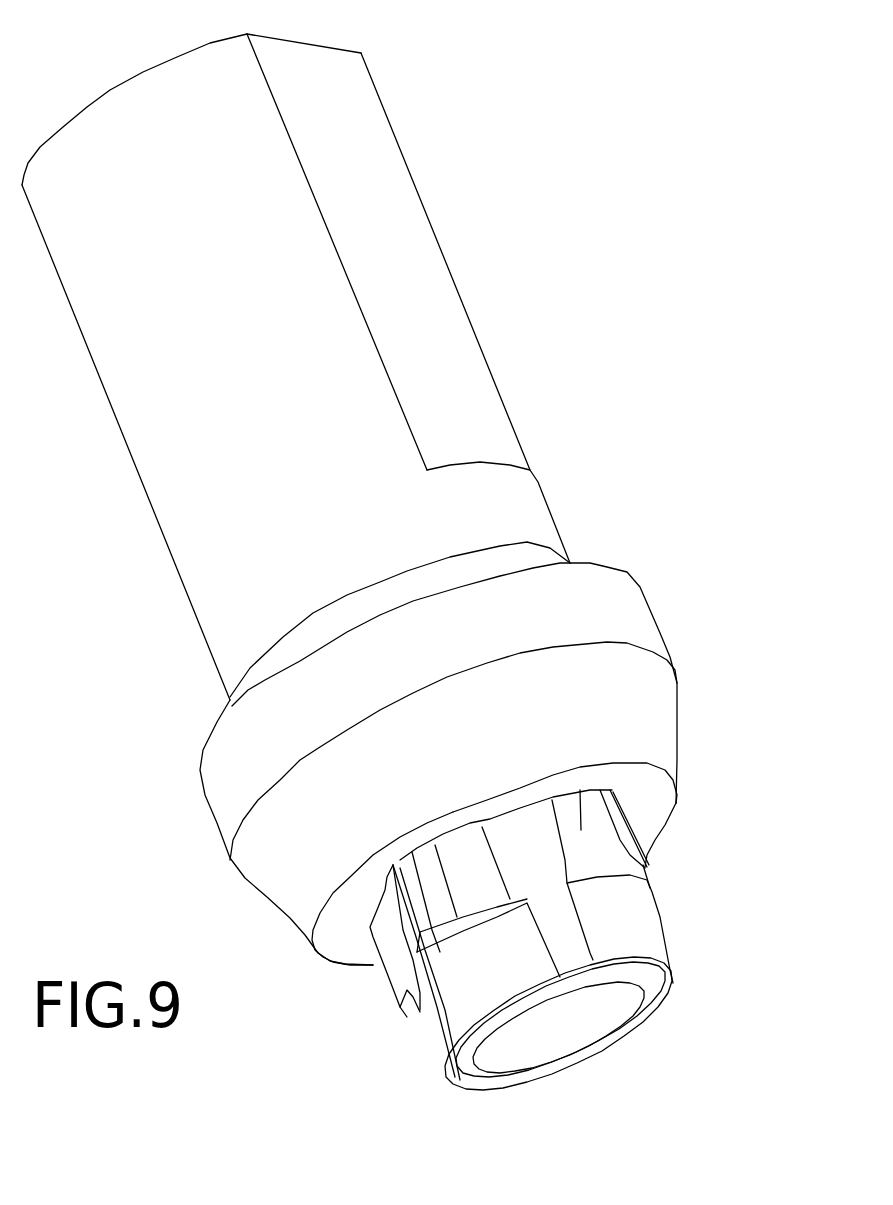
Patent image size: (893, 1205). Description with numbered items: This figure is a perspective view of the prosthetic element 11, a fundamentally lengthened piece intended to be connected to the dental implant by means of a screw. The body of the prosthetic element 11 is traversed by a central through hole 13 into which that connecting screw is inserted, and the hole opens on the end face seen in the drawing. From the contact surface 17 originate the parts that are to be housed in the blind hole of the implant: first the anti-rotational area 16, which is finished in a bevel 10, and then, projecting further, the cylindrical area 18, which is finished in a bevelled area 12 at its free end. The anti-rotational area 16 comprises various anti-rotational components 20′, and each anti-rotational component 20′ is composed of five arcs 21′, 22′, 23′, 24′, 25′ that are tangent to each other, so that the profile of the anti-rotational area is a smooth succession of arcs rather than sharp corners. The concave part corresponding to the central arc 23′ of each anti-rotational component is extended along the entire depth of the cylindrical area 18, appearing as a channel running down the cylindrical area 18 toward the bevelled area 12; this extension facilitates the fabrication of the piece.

The bevel 10 is at (619, 819).
The prosthetic element 11 is at (527, 213).
The bevelled area 12 is at (635, 1023).
The central through hole 13 is at (612, 1027).
The anti-rotational area 16 is at (496, 764).
The contact surface 17 is at (453, 856).
The cylindrical area 18 is at (614, 940).
The anti-rotational component 20′ is at (384, 949).
The arc 21′ is at (409, 857).
The arc 22′ is at (455, 839).
The central arc 23′ is at (488, 858).
The arc 24′ is at (563, 766).
The arc 25′ is at (623, 780).